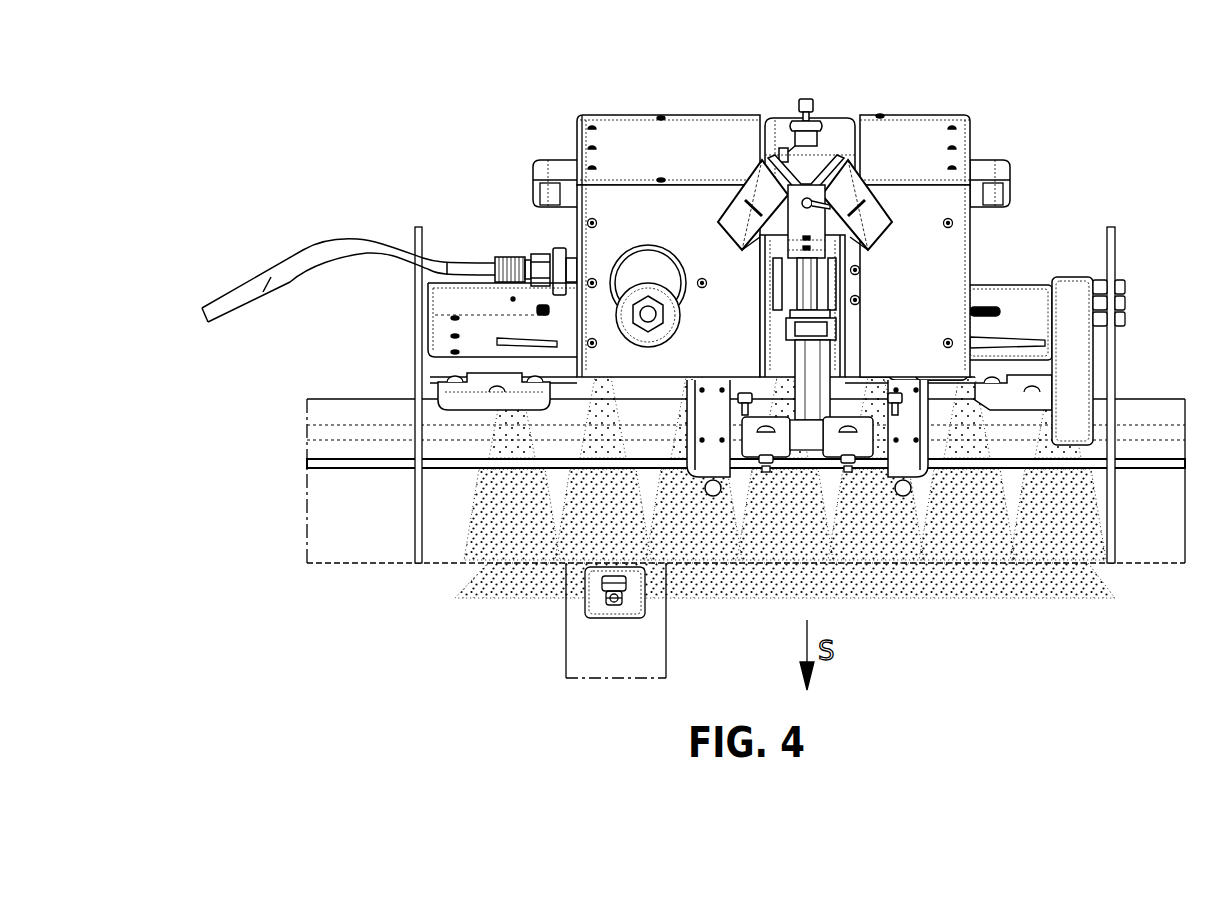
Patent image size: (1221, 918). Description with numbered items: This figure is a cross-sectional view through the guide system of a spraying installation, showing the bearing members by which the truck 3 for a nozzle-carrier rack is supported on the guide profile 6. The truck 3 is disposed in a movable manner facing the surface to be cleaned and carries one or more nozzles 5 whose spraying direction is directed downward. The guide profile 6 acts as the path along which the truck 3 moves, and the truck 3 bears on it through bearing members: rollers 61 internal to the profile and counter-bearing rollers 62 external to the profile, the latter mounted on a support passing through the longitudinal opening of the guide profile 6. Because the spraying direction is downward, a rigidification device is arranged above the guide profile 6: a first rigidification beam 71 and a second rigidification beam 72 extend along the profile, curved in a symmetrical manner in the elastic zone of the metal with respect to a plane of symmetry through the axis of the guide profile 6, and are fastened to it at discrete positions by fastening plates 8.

The truck 3 is at (770, 455).
The nozzle 5 is at (1018, 136).
The guide profile 6 is at (809, 197).
The internal rollers 61 is at (823, 293).
The external rollers 62 is at (827, 392).
The first rigidification beam 71 is at (743, 185).
The second rigidification beam 72 is at (873, 183).
The fastening plates 8 is at (762, 158).